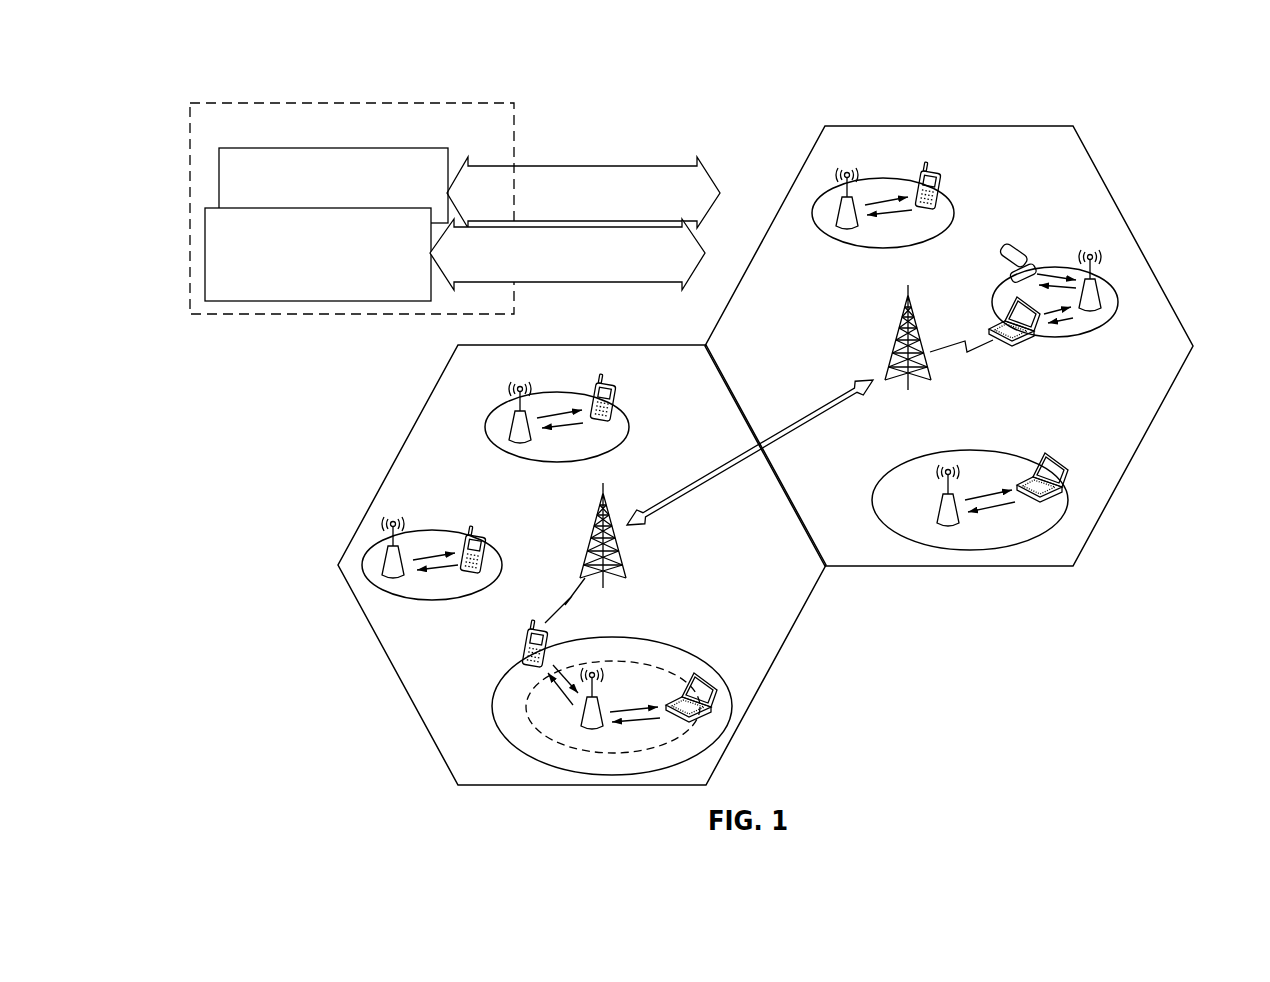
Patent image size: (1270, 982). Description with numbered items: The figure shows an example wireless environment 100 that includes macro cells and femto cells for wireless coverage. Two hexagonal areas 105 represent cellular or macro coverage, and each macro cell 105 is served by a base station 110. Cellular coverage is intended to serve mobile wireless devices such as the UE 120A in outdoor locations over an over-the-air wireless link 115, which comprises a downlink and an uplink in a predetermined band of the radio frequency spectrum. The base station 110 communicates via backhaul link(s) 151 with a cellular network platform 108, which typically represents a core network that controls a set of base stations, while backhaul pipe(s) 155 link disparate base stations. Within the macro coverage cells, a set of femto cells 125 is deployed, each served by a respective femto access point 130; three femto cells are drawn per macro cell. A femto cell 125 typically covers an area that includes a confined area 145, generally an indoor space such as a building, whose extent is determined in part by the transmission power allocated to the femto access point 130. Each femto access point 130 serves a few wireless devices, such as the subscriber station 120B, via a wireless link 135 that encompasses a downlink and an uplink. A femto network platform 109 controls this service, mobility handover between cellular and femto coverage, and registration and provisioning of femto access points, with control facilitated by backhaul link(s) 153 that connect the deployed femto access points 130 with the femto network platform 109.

The wireless environment 100 is at (1158, 117).
The macro cell 105 is at (958, 126).
The cellular network platform 108 is at (219, 195).
The femto network platform 109 is at (302, 290).
The base station 110 is at (905, 325).
The wireless link 115 is at (968, 351).
The user equipment 120A is at (991, 318).
The subscriber station 120B is at (931, 172).
The femto cell 125 is at (833, 239).
The femto access point 130 is at (840, 200).
The wireless link 135 is at (878, 198).
The confined area 145 is at (627, 662).
The backhaul link 151 is at (665, 163).
The backhaul link 153 is at (642, 286).
The backhaul pipe 155 is at (352, 103).